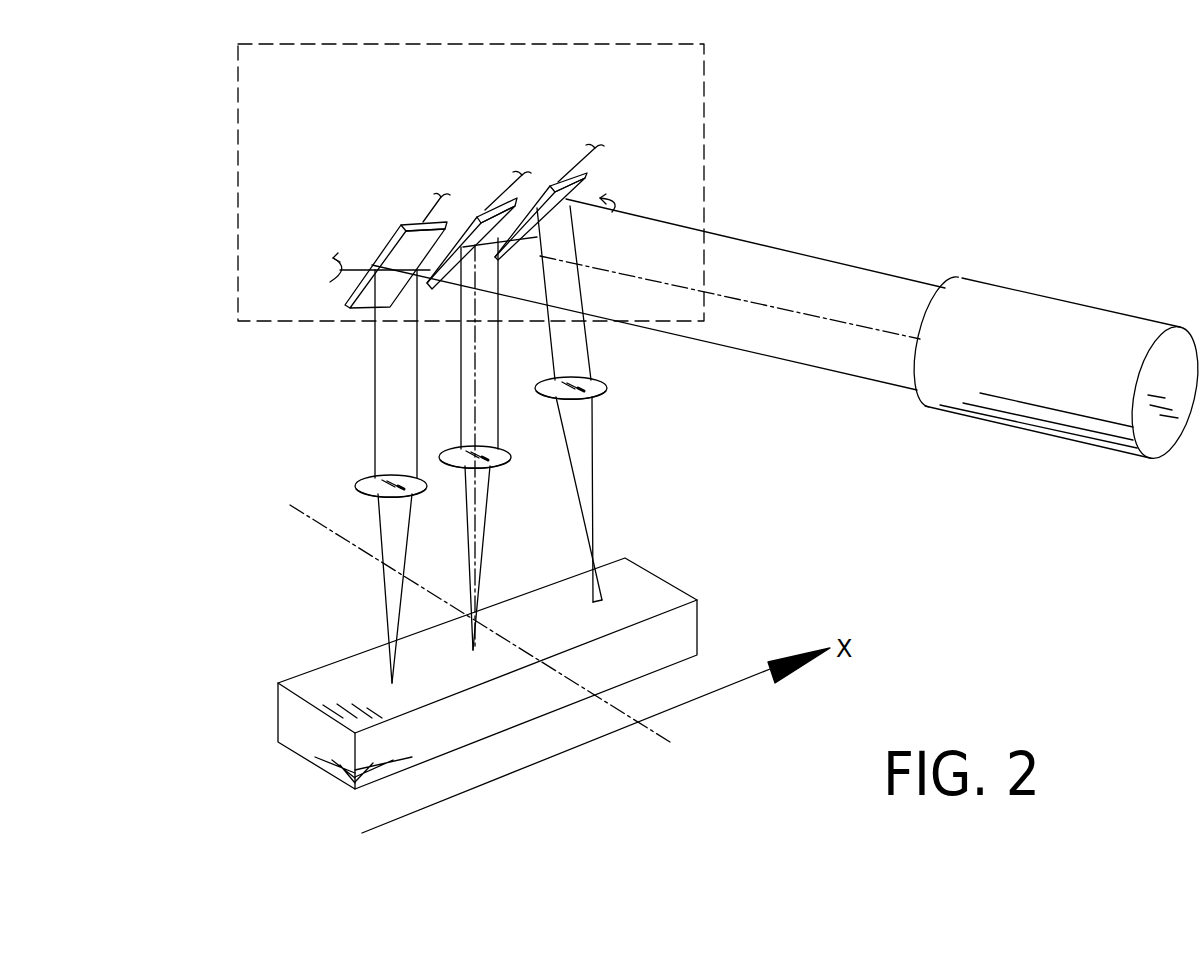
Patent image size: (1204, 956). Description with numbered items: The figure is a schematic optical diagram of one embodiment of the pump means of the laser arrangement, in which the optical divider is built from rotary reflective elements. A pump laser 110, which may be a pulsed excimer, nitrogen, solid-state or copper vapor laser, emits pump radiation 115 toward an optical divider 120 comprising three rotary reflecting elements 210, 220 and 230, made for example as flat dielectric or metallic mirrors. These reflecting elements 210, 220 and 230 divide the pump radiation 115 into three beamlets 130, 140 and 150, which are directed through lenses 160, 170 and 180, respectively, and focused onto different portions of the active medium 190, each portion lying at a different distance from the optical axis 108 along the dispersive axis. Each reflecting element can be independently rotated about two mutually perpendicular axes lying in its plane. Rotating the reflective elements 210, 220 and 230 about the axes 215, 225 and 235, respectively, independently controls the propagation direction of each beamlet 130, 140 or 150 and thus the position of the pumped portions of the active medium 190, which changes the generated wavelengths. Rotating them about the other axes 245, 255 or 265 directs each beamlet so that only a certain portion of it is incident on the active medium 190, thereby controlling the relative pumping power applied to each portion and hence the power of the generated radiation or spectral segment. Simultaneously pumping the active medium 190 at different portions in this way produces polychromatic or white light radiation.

The optical axis 108 is at (656, 735).
The pump laser 110 is at (1028, 320).
The pump radiation 115 is at (798, 275).
The optical divider 120 is at (267, 93).
The beamlet 130 is at (383, 366).
The beamlet 140 is at (487, 367).
The beamlet 150 is at (584, 362).
The lens 160 is at (362, 482).
The lens 170 is at (509, 460).
The lens 180 is at (606, 392).
The active medium 190 is at (310, 680).
The rotary reflecting element 210 is at (412, 226).
The axis 215 is at (338, 280).
The rotary reflecting element 220 is at (505, 193).
The axis 225 is at (538, 239).
The rotary reflecting element 230 is at (576, 170).
The axis 235 is at (618, 207).
The axis 245 is at (432, 197).
The axis 255 is at (510, 178).
The axis 265 is at (584, 148).